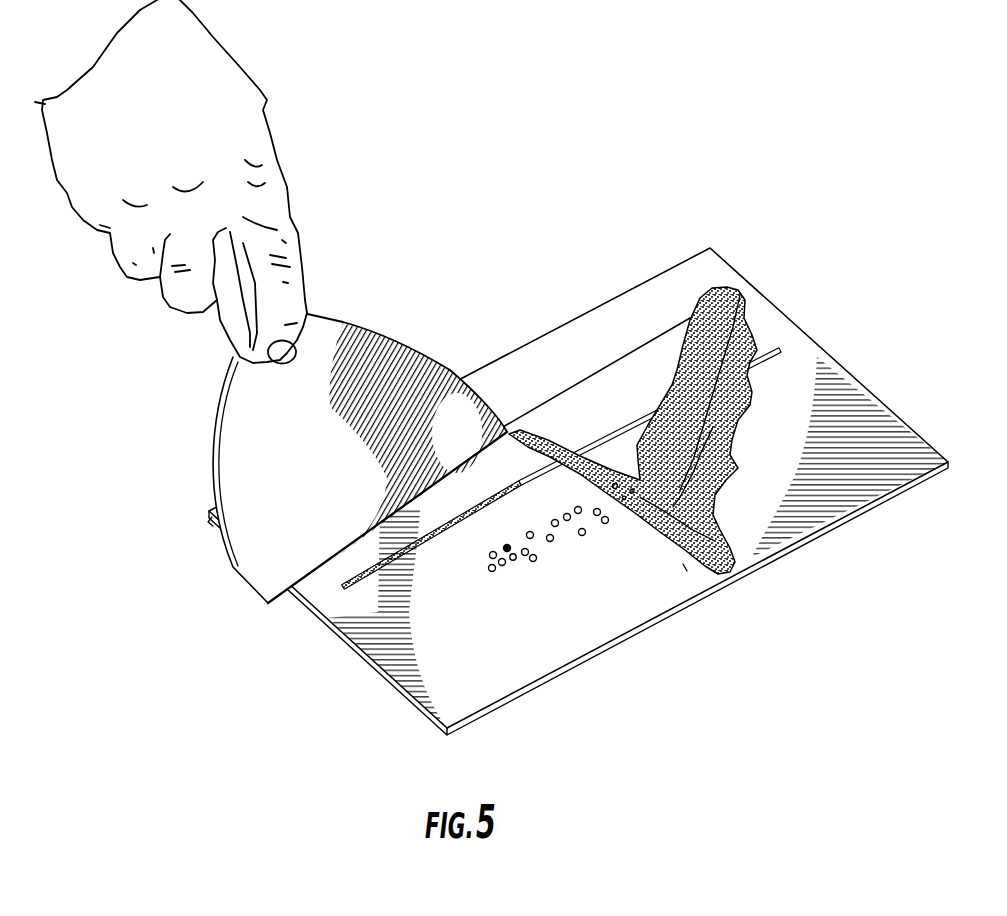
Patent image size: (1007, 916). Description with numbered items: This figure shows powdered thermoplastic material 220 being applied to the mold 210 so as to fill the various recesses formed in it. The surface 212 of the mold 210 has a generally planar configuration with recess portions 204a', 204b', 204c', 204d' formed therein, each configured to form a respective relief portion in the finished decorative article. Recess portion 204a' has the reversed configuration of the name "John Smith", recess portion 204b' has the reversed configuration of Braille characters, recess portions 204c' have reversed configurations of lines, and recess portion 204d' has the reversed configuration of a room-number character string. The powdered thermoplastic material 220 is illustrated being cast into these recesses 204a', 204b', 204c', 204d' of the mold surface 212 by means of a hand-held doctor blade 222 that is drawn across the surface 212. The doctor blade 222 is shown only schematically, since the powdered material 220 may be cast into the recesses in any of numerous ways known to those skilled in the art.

The mold 210 is at (768, 264).
The surface of the mold 212 is at (787, 410).
The powdered thermoplastic material 220 is at (710, 303).
The doctor blade 222 is at (365, 367).
The recess portion 204a' is at (610, 264).
The recess portion 204b' is at (534, 592).
The recess portions 204c' is at (536, 313).
The recess portion 204d' is at (551, 512).